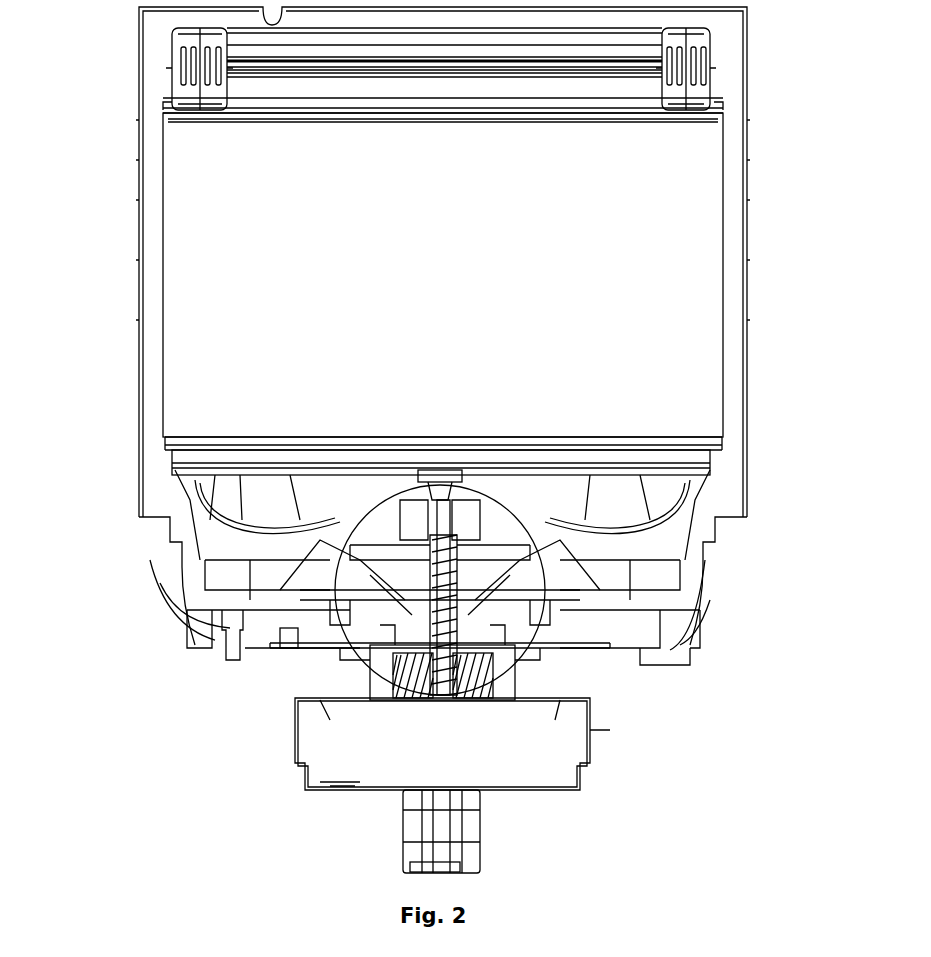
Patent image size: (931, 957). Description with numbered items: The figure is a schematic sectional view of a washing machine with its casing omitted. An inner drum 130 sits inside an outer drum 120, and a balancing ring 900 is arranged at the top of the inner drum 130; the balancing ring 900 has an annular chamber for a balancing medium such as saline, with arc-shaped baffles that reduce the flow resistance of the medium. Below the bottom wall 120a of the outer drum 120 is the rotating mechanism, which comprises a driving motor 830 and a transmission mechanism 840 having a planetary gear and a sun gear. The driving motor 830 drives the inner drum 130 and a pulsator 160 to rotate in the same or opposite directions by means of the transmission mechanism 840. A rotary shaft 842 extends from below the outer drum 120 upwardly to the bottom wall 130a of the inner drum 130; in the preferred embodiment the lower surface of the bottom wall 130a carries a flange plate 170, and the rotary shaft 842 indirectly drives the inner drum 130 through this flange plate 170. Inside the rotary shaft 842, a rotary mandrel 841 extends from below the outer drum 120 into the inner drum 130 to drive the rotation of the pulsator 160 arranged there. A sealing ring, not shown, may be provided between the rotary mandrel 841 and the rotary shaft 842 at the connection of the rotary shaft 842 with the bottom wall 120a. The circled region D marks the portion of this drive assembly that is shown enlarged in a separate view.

The balancing ring 900 is at (172, 90).
The inner drum 130 is at (163, 207).
The outer drum 120 is at (140, 377).
The bottom wall of the inner drum 130a is at (257, 580).
The bottom wall of the outer drum 120a is at (225, 598).
The rotary mandrel 841 is at (340, 642).
The region D is at (370, 680).
The pulsator 160 is at (560, 545).
The flange plate 170 is at (600, 597).
The rotary shaft 842 is at (600, 665).
The transmission mechanism 840 is at (600, 765).
The driving motor 830 is at (450, 862).